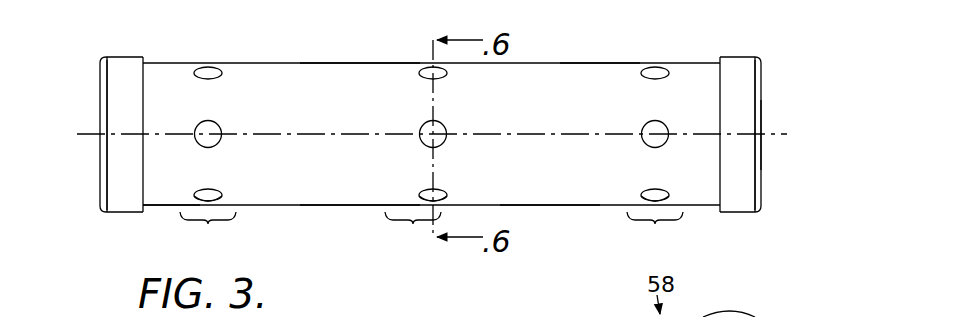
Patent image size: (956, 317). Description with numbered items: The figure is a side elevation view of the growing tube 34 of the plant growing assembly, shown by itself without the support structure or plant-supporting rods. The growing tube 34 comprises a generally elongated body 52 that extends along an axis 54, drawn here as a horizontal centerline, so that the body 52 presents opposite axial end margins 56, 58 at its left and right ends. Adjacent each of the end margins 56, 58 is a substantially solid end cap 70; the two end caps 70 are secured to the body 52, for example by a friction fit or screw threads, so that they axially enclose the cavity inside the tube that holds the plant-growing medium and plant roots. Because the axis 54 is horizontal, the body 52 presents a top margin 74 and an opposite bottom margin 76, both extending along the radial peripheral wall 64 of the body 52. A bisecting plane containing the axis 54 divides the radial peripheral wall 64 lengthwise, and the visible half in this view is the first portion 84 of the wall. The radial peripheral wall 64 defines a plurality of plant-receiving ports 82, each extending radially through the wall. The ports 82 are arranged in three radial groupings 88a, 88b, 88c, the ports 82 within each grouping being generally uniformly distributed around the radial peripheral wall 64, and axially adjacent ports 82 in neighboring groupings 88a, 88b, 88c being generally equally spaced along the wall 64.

The growing tube 34 is at (554, 220).
The elongated body 52 is at (162, 208).
The axis 54 is at (774, 133).
The first axial end margin 56 is at (156, 58).
The second axial end margin 58 is at (702, 56).
The radial peripheral wall 64 is at (305, 84).
The end cap 70 is at (117, 90).
The top margin 74 is at (361, 59).
The bottom margin 76 is at (357, 210).
The plant-receiving port 82 is at (216, 77).
The first portion of the radial peripheral wall 84 is at (588, 72).
The first radial grouping 88a is at (208, 233).
The second radial grouping 88b is at (413, 232).
The third radial grouping 88c is at (655, 232).